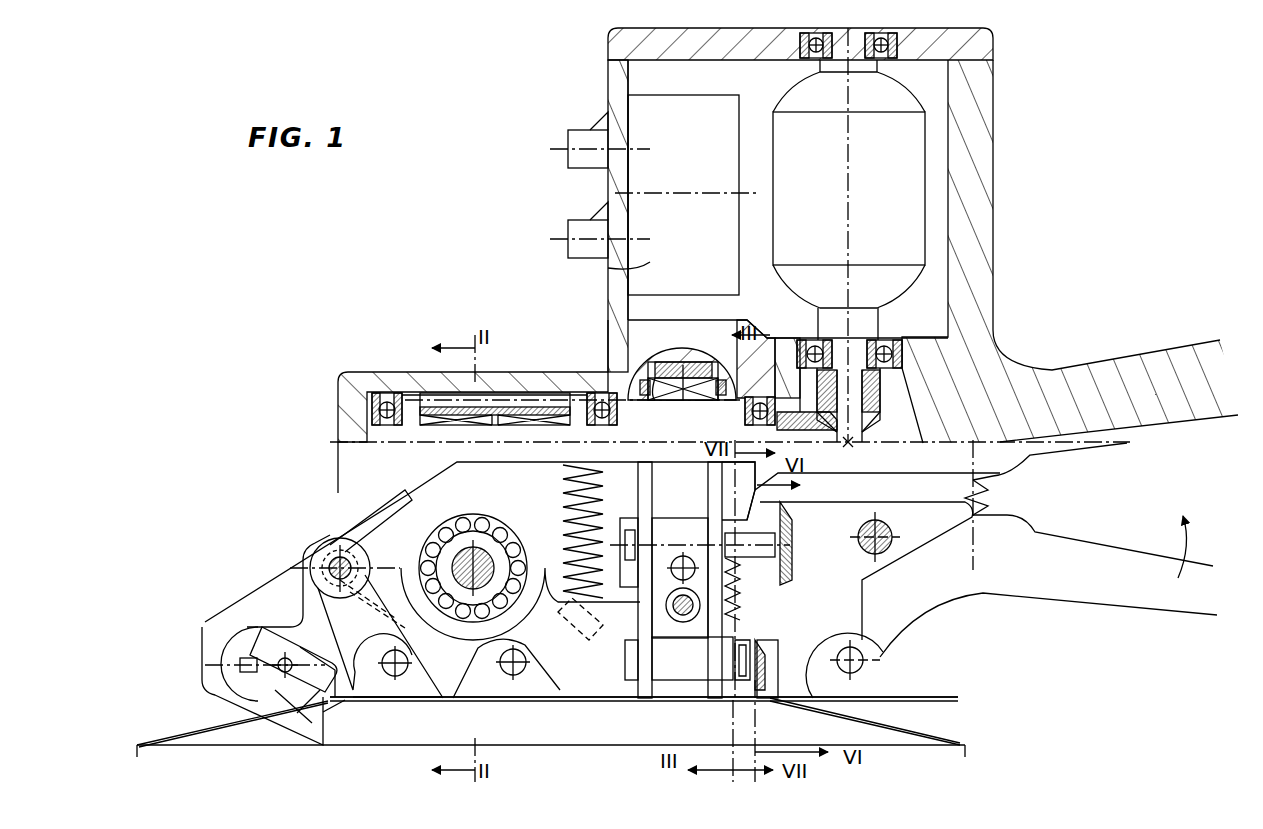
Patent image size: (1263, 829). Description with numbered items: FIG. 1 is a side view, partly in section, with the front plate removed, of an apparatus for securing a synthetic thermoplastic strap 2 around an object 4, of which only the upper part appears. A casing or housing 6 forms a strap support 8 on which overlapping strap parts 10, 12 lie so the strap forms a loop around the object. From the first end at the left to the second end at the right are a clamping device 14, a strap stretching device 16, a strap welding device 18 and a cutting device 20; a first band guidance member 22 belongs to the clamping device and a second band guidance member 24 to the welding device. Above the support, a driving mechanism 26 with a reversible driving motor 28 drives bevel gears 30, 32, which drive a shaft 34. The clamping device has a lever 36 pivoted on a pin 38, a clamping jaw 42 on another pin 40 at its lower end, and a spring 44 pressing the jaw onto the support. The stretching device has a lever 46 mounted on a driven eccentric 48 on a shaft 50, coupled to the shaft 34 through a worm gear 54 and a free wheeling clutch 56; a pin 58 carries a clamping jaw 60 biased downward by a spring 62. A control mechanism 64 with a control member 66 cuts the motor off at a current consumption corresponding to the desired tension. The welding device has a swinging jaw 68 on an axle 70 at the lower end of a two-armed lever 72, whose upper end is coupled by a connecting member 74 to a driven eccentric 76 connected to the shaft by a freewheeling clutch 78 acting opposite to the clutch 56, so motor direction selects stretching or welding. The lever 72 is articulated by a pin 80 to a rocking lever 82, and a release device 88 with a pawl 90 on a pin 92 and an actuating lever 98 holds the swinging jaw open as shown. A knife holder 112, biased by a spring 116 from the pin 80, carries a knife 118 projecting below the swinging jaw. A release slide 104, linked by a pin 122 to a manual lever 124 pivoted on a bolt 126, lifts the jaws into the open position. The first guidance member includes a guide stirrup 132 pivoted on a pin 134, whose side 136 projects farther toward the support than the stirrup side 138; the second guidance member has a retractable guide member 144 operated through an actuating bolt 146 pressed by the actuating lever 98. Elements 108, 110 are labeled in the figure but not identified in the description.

The synthetic thermoplastic strap 2 is at (168, 705).
The object 4 is at (955, 742).
The casing or housing 6 is at (270, 575).
The strap support 8 is at (510, 702).
The upper strap part 10 is at (942, 697).
The strap part 12 is at (965, 748).
The clamping device 14 is at (305, 598).
The strap stretching device 16 is at (400, 525).
The strap welding device 18 is at (635, 690).
The cutting device 20 is at (700, 690).
The first band guidance member 22 is at (300, 650).
The second band guidance member 24 is at (805, 635).
The driving mechanism 26 is at (915, 320).
The driving motor 28 is at (874, 178).
The bevel gear 30 is at (885, 420).
The bevel gear 32 is at (838, 432).
The shaft 34 is at (376, 405).
The lever 36 is at (370, 648).
The pin 38 is at (335, 558).
The pin 40 is at (410, 660).
The clamping jaw 42 is at (415, 680).
The spring 44 is at (375, 525).
The lever 46 is at (560, 620).
The driven eccentric 48 is at (490, 538).
The shaft 50 is at (485, 555).
The worm gear 54 is at (512, 400).
The free wheeling clutch 56 is at (592, 400).
The pin 58 is at (520, 690).
The clamping jaw 60 is at (462, 702).
The spring 62 is at (572, 470).
The control mechanism 64 is at (650, 178).
The control member 66 is at (578, 148).
The swinging jaw 68 is at (660, 682).
The axle 70 is at (630, 665).
The two-armed lever 72 is at (643, 470).
The connecting member 74 is at (670, 382).
The driven eccentric 76 is at (690, 385).
The freewheeling clutch 78 is at (682, 358).
The pin 80 is at (633, 540).
The rocking lever 82 is at (660, 530).
The release device 88 is at (668, 600).
The pawl 90 is at (700, 575).
The pin 92 is at (672, 622).
The actuating lever 98 is at (922, 540).
The release slide 104 is at (870, 650).
The lead 108 is at (640, 266).
The terminal 110 is at (580, 250).
The knife holder 112 is at (797, 523).
The spring 116 is at (742, 592).
The knife 118 is at (745, 690).
The pin 122 is at (875, 680).
The manual lever 124 is at (1052, 560).
The bolt 126 is at (890, 553).
The guide stirrup 132 is at (272, 650).
The pin 134 is at (240, 690).
The side 136 is at (322, 725).
The stirrup side 138 is at (335, 703).
The guide member 144 is at (765, 690).
The actuating bolt 146 is at (775, 605).